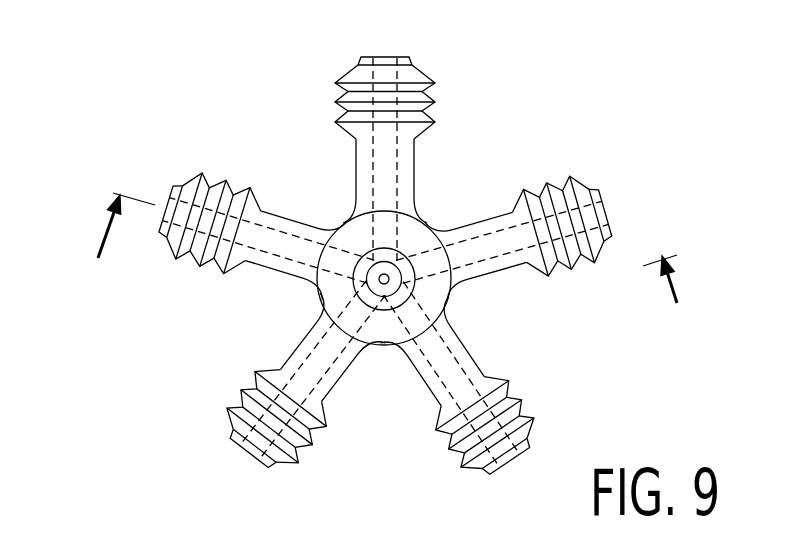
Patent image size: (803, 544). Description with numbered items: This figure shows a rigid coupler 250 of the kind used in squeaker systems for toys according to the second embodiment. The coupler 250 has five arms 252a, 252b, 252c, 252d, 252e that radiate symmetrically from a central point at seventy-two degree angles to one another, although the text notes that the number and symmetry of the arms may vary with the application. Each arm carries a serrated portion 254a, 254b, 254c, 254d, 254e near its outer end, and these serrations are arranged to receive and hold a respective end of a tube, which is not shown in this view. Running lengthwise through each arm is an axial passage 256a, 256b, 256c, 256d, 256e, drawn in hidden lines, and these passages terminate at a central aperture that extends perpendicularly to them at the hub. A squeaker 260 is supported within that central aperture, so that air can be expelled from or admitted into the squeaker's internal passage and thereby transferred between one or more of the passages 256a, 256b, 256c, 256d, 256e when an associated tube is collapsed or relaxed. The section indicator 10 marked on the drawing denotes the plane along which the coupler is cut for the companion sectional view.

The rigid coupler 250 is at (306, 316).
The squeaker 260 is at (443, 308).
The section line 10 is at (389, 259).
The arm 252a is at (163, 232).
The serrated portion 254a is at (197, 178).
The axial passage 256a is at (300, 281).
The arm 252b is at (414, 60).
The serrated portion 254b is at (340, 82).
The axial passage 256b is at (392, 152).
The arm 252c is at (588, 198).
The serrated portion 254c is at (570, 268).
The axial passage 256c is at (606, 214).
The arm 252d is at (533, 447).
The serrated portion 254d is at (532, 404).
The axial passage 256d is at (453, 447).
The arm 252e is at (232, 443).
The serrated portion 254e is at (329, 428).
The axial passage 256e is at (276, 472).